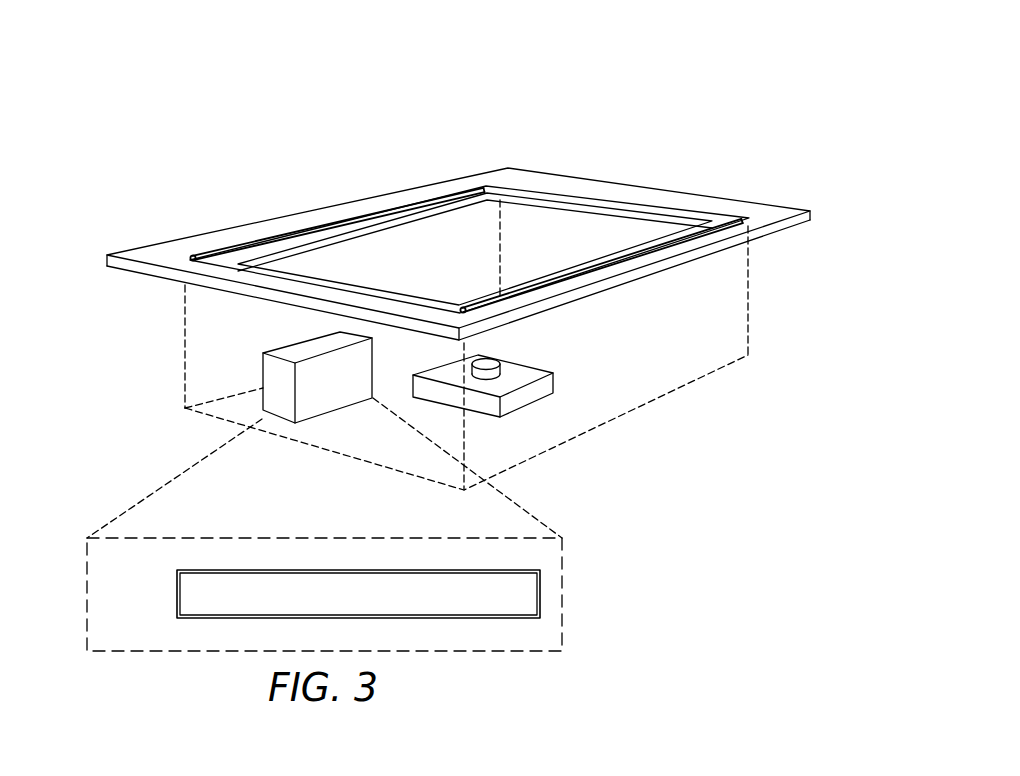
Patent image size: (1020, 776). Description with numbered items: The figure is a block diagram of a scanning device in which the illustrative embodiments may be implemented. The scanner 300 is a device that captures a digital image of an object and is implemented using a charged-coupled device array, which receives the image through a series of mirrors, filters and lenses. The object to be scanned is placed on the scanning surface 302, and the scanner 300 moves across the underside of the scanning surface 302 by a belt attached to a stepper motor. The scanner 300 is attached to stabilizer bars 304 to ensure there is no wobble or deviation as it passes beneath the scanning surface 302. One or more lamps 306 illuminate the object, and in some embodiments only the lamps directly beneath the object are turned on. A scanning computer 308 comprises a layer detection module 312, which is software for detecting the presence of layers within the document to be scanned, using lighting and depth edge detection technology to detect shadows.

The scanner 300 is at (632, 148).
The scanning surface 302 is at (379, 237).
The stabilizer bars 304 is at (553, 278).
The lamps 306 is at (553, 379).
The scanning computer 308 is at (263, 373).
The layer detection module 312 is at (177, 594).